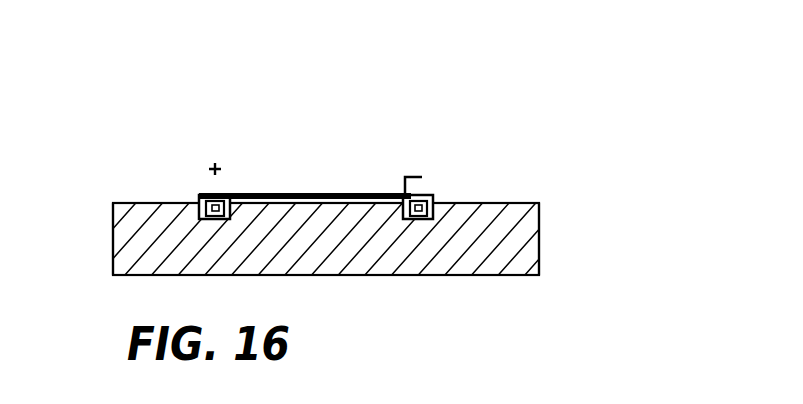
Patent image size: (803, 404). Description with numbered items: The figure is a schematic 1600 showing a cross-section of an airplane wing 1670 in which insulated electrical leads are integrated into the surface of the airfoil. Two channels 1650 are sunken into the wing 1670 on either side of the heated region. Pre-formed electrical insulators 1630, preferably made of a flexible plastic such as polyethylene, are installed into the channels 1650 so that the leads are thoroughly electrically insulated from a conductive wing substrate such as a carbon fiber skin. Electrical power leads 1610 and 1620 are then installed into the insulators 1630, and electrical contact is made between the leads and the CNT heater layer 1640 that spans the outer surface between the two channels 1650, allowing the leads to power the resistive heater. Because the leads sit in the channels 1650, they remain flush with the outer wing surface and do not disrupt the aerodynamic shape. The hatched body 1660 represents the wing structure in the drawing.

The schematic 1600 is at (162, 120).
The electrical power lead 1610 is at (200, 198).
The electrical power lead 1620 is at (402, 190).
The pre-formed electrical insulator 1630 is at (434, 186).
The CNT heater layer 1640 is at (300, 190).
The channel 1650 is at (447, 205).
The substrate 1660 is at (434, 277).
The wing 1670 is at (543, 200).